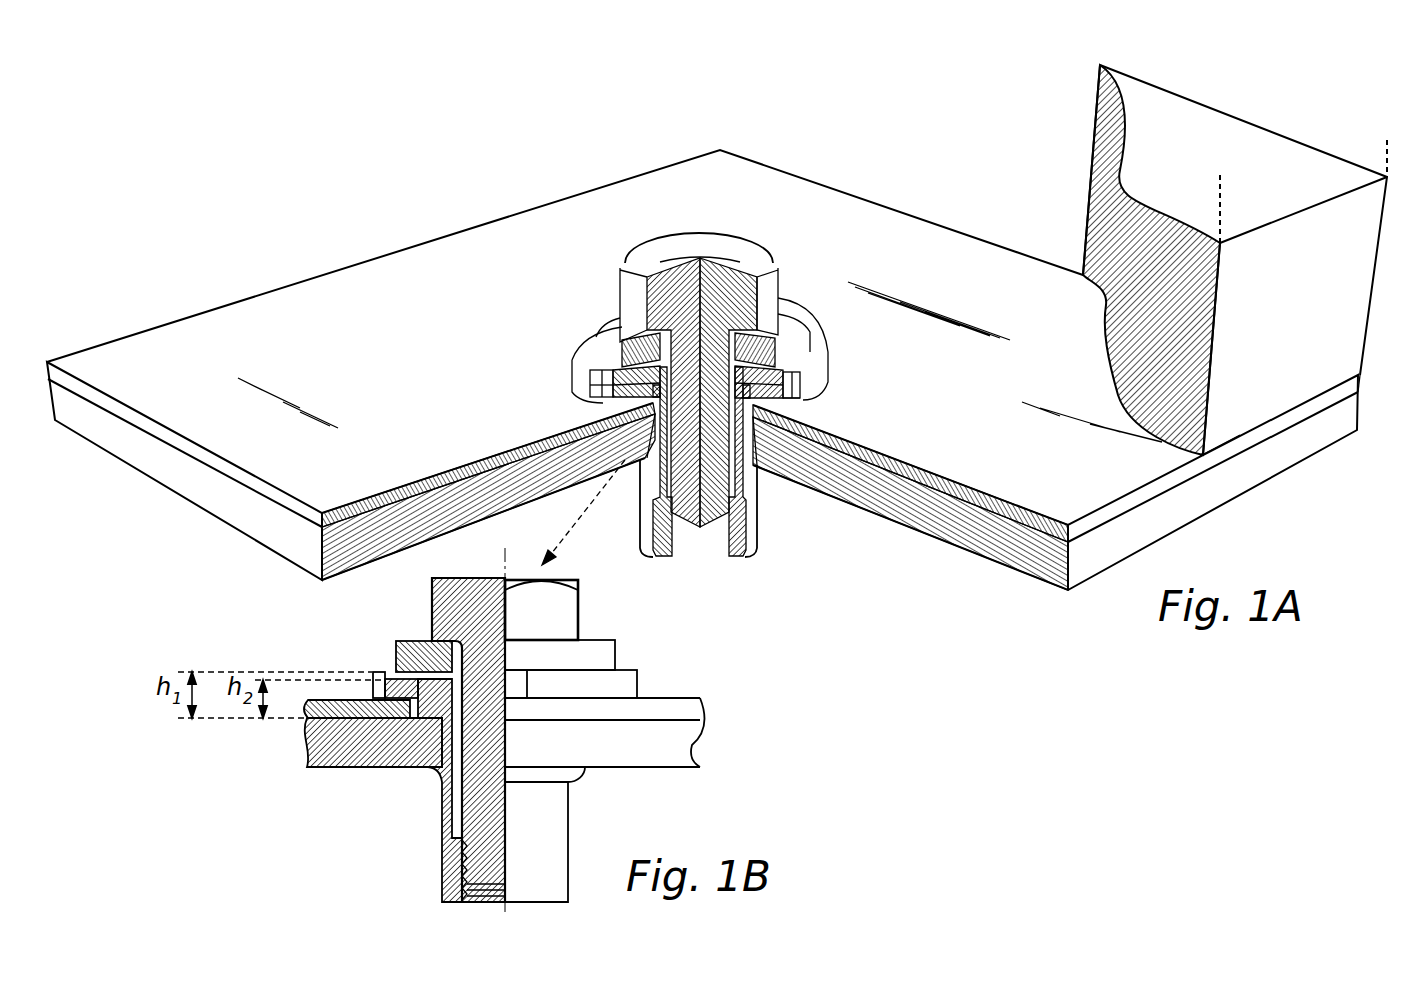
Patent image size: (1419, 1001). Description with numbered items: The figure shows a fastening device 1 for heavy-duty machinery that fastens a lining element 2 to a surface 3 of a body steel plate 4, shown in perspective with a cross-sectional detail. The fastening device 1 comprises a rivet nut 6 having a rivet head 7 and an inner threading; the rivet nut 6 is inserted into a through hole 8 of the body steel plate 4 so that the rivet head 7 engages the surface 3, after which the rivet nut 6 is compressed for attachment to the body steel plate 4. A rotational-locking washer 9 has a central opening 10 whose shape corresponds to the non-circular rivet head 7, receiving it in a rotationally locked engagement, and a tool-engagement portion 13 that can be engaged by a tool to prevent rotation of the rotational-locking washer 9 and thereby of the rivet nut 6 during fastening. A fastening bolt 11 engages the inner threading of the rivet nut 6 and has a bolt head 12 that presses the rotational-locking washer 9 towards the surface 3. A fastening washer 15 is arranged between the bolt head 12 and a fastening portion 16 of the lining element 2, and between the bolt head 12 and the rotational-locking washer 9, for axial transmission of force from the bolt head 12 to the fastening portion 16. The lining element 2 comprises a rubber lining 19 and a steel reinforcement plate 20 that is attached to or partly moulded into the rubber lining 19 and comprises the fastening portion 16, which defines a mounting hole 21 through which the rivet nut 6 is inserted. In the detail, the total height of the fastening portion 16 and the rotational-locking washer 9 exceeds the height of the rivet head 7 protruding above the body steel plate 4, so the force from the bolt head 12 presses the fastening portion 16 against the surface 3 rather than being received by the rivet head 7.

The fastening device 1 is at (903, 114).
The lining element 2 is at (1318, 178).
The surface 3 is at (940, 470).
The body steel plate 4 is at (972, 530).
The rivet nut 6 is at (752, 540).
The rivet head 7 is at (612, 385).
The through hole 8 is at (752, 458).
The rotational-locking washer 9 is at (812, 345).
The central opening 10 is at (635, 325).
The fastening bolt 11 is at (697, 243).
The bolt head 12 is at (745, 272).
The tool-engagement portion 13 is at (835, 378).
The fastening washer 15 is at (785, 318).
The fastening portion 16 is at (805, 395).
The rubber lining 19 is at (1333, 335).
The steel reinforcement plate 20 is at (1293, 417).
The mounting hole 21 is at (795, 465).